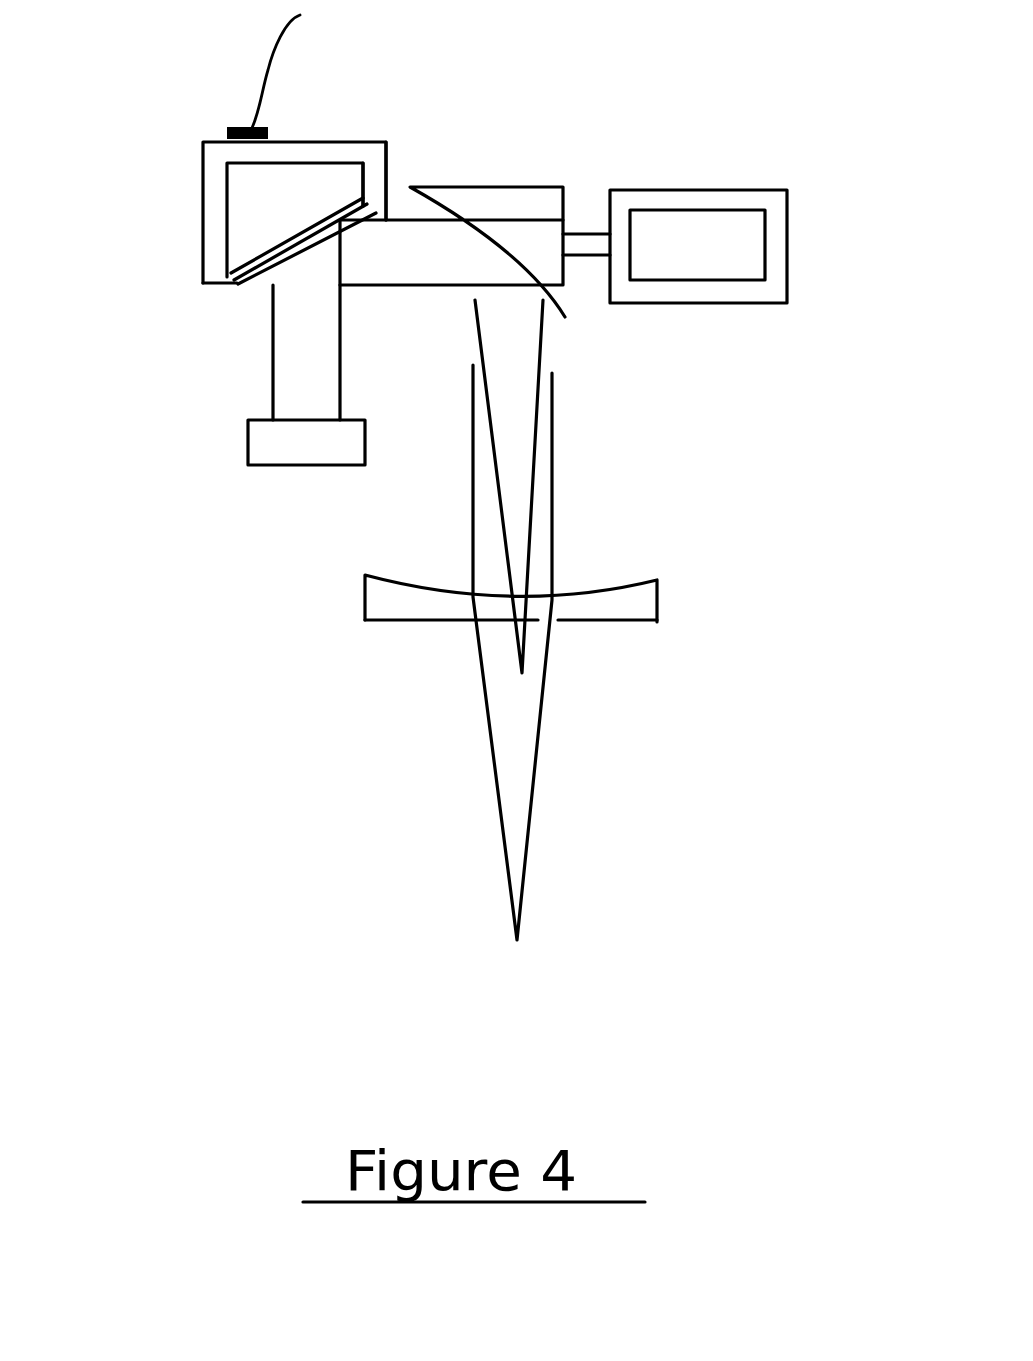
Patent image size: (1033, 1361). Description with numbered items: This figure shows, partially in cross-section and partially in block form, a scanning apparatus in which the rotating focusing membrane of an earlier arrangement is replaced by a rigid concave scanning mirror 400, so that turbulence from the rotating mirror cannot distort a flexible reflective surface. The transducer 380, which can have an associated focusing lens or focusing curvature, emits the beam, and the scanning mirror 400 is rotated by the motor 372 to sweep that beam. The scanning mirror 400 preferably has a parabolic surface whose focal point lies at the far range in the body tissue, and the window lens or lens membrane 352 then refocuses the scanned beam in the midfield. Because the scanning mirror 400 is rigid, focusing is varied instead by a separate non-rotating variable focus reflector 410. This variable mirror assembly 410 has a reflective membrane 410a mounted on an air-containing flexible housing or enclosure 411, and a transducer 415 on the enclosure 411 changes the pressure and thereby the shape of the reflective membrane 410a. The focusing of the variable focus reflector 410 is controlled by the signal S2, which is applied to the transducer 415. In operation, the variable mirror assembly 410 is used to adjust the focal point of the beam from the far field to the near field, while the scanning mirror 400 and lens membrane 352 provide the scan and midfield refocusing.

The variable focus reflector 410 is at (188, 214).
The reflective membrane 410a is at (292, 252).
The air-containing flexible housing/enclosure 411 is at (357, 157).
The transducer 415 is at (236, 128).
The signal S2 is at (302, 64).
The rigid concave scanning mirror 400 is at (520, 205).
The motor 372 is at (712, 232).
The transducer 380 is at (300, 447).
The window lens 352 is at (655, 602).